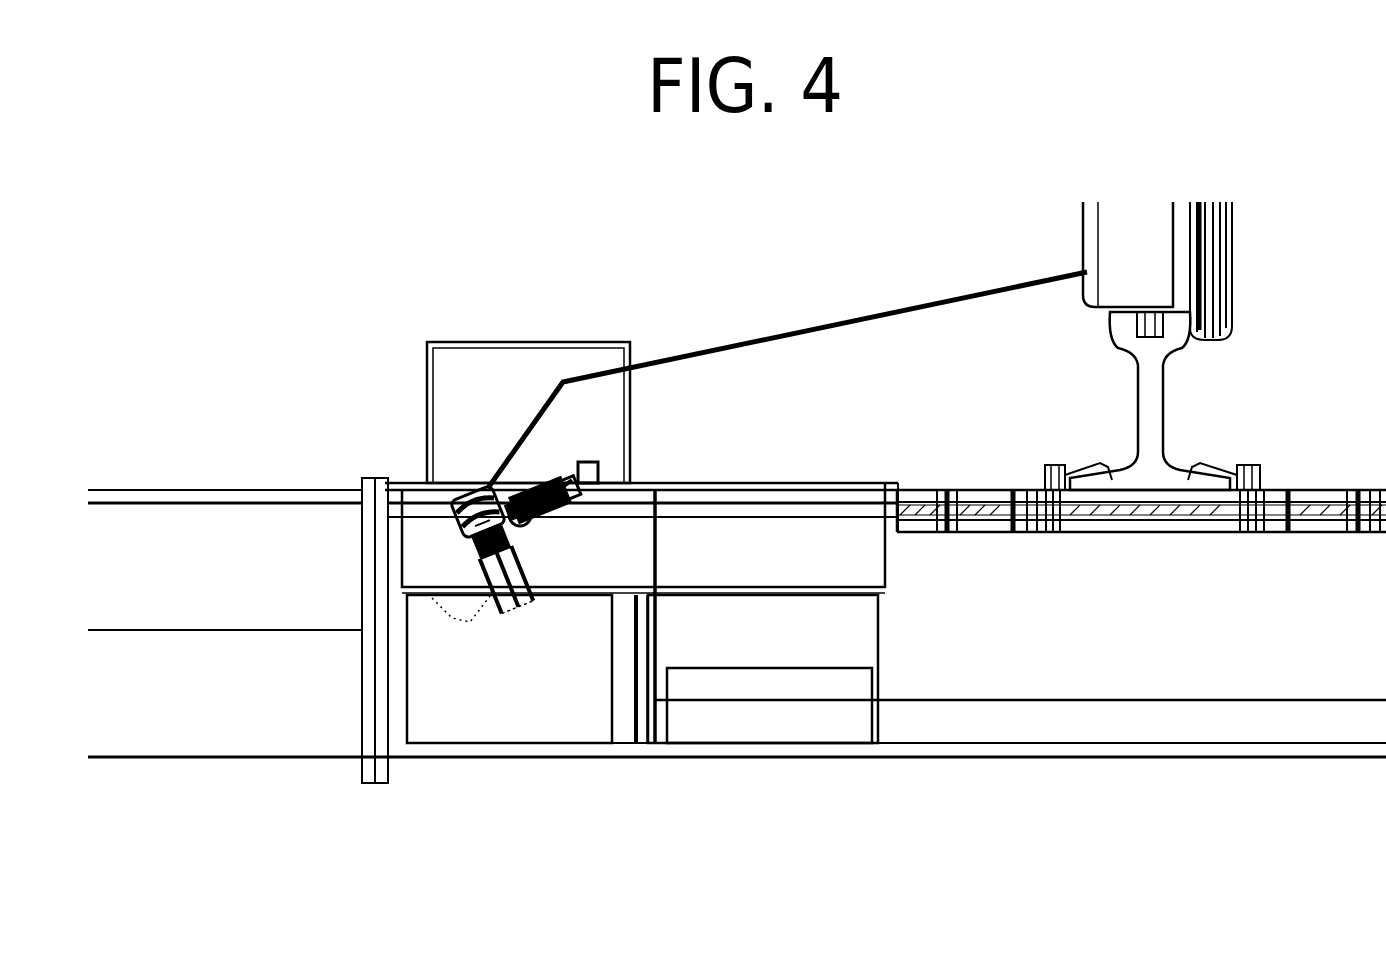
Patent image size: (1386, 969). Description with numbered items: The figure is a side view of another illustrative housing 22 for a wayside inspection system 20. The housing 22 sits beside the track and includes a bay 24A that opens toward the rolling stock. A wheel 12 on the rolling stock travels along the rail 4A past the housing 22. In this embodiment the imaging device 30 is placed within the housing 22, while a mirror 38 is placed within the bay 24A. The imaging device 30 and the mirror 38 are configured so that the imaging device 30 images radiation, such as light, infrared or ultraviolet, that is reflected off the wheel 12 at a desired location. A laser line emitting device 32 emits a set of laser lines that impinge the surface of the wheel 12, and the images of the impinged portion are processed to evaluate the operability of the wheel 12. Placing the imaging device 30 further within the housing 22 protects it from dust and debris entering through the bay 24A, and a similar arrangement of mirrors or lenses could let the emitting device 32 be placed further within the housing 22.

The wayside inspection system 20 is at (318, 236).
The wheel 12 is at (1148, 268).
The rail 4A is at (1138, 435).
The bay 24A is at (428, 410).
The mirror 38 is at (560, 380).
The laser line emitting device 32 is at (555, 512).
The imaging device 30 is at (498, 548).
The housing 22 is at (1053, 760).